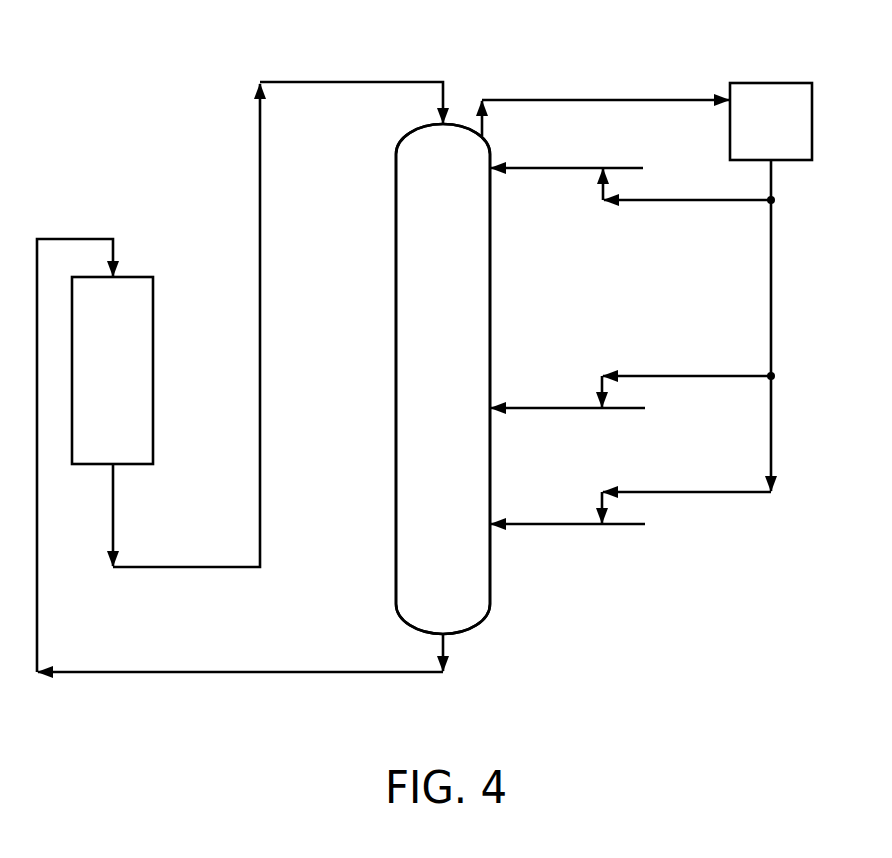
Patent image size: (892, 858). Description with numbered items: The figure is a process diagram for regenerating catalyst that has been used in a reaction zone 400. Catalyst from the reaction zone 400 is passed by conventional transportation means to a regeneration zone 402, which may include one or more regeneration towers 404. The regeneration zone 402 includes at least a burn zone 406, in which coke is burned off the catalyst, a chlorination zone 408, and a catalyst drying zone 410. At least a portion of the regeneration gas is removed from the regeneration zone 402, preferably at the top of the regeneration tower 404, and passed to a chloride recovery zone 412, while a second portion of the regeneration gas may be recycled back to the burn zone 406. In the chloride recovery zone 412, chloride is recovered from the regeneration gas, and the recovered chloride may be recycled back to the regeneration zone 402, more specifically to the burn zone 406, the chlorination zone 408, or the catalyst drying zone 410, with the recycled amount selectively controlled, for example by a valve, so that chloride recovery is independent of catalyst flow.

The reaction zone 400 is at (153, 230).
The regeneration zone 402 is at (490, 63).
The regeneration tower 404 is at (490, 574).
The burn zone 406 is at (383, 160).
The chlorination zone 408 is at (383, 327).
The catalyst drying zone 410 is at (383, 445).
The chloride recovery zone 412 is at (812, 65).